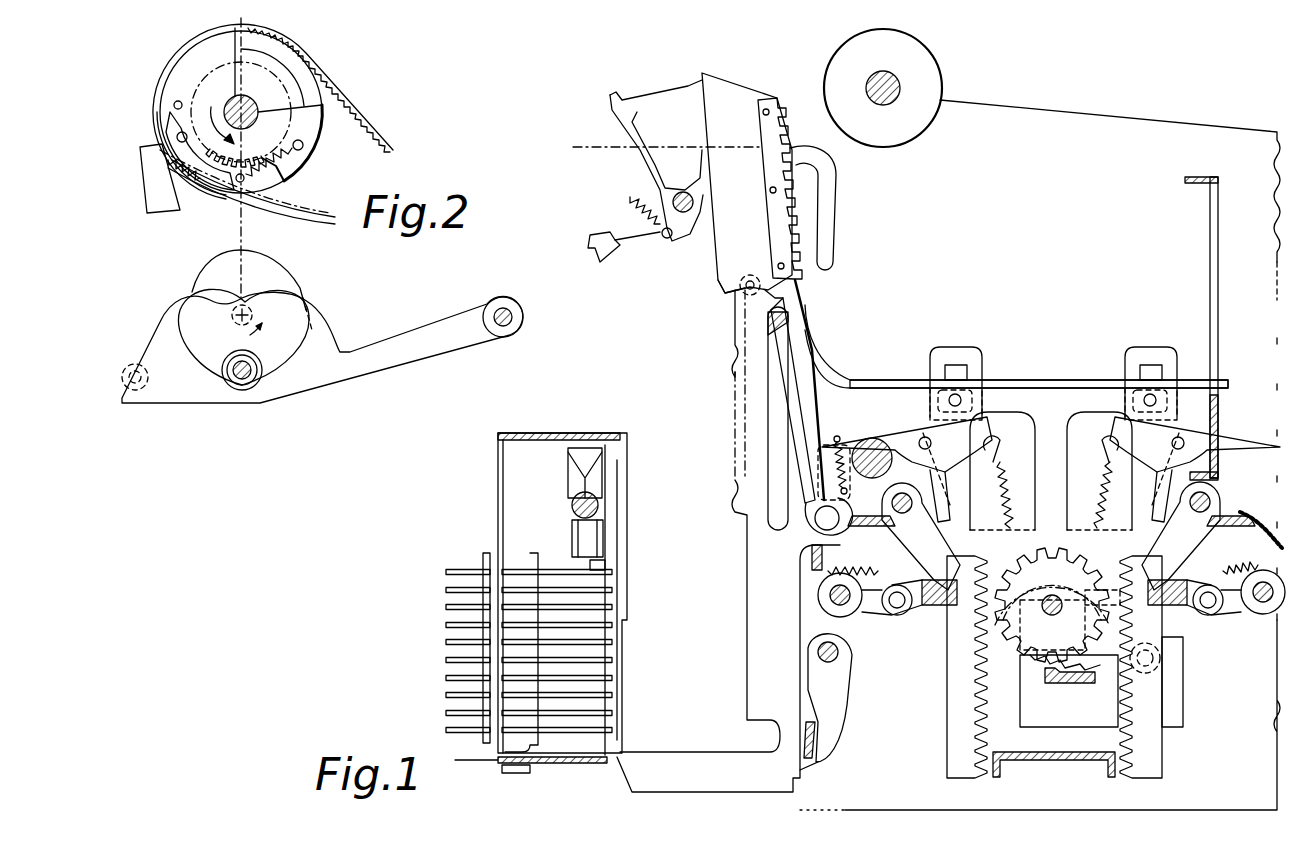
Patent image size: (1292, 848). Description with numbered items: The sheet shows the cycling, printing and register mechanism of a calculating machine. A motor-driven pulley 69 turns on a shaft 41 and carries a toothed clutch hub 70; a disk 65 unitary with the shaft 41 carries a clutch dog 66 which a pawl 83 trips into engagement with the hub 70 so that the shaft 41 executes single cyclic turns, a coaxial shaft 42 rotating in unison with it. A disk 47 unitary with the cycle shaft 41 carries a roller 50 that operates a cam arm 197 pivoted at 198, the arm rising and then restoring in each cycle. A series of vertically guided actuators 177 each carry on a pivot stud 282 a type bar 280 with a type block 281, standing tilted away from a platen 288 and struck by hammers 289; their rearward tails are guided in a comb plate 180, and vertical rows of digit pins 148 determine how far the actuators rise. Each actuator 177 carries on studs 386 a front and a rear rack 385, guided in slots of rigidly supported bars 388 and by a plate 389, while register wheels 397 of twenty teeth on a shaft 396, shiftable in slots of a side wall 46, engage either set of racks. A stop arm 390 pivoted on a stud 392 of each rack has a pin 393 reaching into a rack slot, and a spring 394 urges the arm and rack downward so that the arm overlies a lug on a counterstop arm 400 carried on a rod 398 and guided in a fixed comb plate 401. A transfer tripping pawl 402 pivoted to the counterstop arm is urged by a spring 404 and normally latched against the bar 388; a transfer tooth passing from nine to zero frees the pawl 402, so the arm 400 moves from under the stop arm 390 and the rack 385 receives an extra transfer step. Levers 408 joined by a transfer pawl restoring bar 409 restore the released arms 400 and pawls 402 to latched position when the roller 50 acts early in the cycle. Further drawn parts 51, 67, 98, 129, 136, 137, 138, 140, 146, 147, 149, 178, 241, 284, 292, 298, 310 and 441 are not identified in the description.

In FIG. 2, the pulley 69 is at (296, 56).
In FIG. 2, the shaft 41 is at (258, 100).
In FIG. 2, the toothed clutch hub 70 is at (296, 112).
In FIG. 2, the disk 65 is at (300, 165).
In FIG. 2, the spring 67 is at (275, 162).
In FIG. 2, the clutch dog 66 is at (213, 178).
In FIG. 2, the pawl 83 is at (148, 200).
In FIG. 2, the link 98 is at (188, 195).
In FIG. 2, the disk 47 is at (280, 272).
In FIG. 2, the shaft 42 is at (254, 318).
In FIG. 1, the shaft 42 is at (870, 438).
In FIG. 2, the roller 50 is at (258, 362).
In FIG. 2, the shaft 51 is at (252, 380).
In FIG. 2, the cam arm 197 is at (352, 350).
In FIG. 2, the pivot 198 is at (495, 308).
In FIG. 1, the hammers 289 is at (642, 92).
In FIG. 1, the type block 281 is at (783, 118).
In FIG. 1, the platen 288 is at (940, 82).
In FIG. 1, the side wall 46 is at (1098, 118).
In FIG. 1, the spring 292 is at (630, 197).
In FIG. 1, the stop 298 is at (598, 236).
In FIG. 1, the type bar 280 is at (800, 283).
In FIG. 1, the lever 178 is at (808, 315).
In FIG. 1, the comb plate 180 is at (1218, 290).
In FIG. 1, the spring 284 is at (840, 436).
In FIG. 1, the stud 392 is at (924, 436).
In FIG. 1, the pin 393 is at (1051, 469).
In FIG. 1, the stop arm 390 is at (980, 448).
In FIG. 1, the studs 386 is at (1148, 400).
In FIG. 1, the spring 394 is at (1095, 500).
In FIG. 1, the rod 398 is at (900, 492).
In FIG. 1, the counterstop arm 400 is at (885, 528).
In FIG. 1, the pivot stud 282 is at (816, 523).
In FIG. 1, the spring 404 is at (870, 568).
In FIG. 1, the comb plate 401 is at (812, 560).
In FIG. 1, the transfer pawl restoring bar 409 is at (850, 612).
In FIG. 1, the lever 408 is at (838, 640).
In FIG. 1, the transfer tripping pawl 402 is at (905, 616).
In FIG. 1, the bars 388 is at (940, 606).
In FIG. 1, the shaft 396 is at (1042, 600).
In FIG. 1, the register wheels 397 is at (1035, 662).
In FIG. 1, the pawl 441 is at (1098, 684).
In FIG. 1, the arm 241 is at (848, 668).
In FIG. 1, the stop 310 is at (833, 735).
In FIG. 1, the actuator 177 is at (802, 772).
In FIG. 1, the rack 385 is at (948, 716).
In FIG. 1, the plate 389 is at (1060, 764).
In FIG. 1, the housing 140 is at (552, 433).
In FIG. 1, the pulley 137 is at (568, 462).
In FIG. 1, the shaft 138 is at (572, 500).
In FIG. 1, the block 147 is at (572, 528).
In FIG. 1, the plate 136 is at (570, 555).
In FIG. 1, the strip 149 is at (532, 570).
In FIG. 1, the frame bar 129 is at (482, 592).
In FIG. 1, the digit pins 148 is at (615, 678).
In FIG. 1, the bracket 146 is at (530, 775).